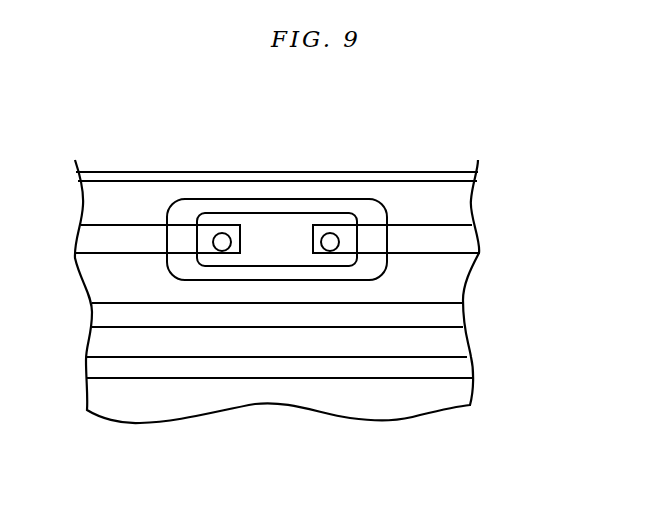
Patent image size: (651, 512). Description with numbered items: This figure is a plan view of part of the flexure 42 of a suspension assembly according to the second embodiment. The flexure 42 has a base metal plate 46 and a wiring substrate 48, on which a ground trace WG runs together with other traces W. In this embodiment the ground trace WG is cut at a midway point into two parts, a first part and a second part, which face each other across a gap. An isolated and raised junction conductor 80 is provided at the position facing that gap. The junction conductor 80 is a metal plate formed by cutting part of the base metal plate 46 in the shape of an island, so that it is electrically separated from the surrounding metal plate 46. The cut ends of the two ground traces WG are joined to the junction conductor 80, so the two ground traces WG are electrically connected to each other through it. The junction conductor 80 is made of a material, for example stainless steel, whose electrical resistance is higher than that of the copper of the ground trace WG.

The flexure 42 is at (330, 415).
The base metal plate 46 is at (200, 170).
The wiring substrate 48 is at (328, 193).
The junction conductor 80 is at (268, 238).
The ground trace WG is at (123, 237).
The wire W is at (435, 313).